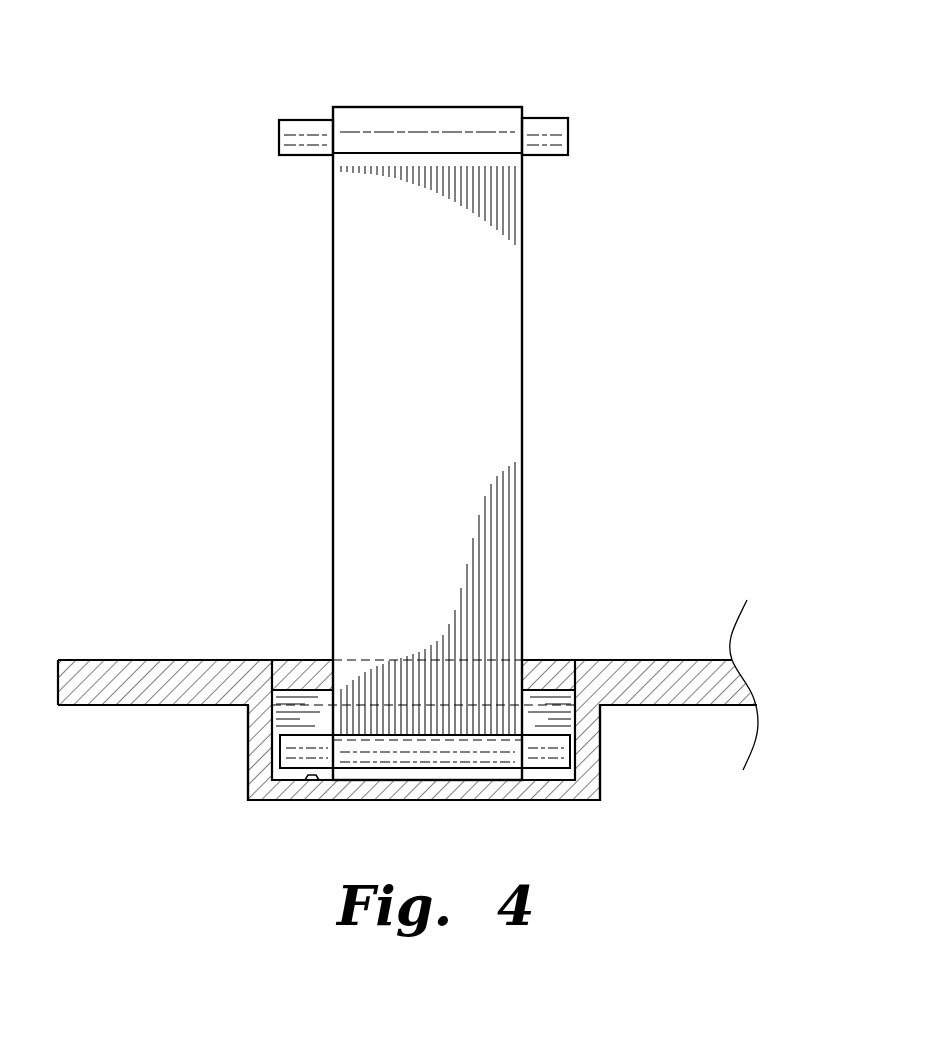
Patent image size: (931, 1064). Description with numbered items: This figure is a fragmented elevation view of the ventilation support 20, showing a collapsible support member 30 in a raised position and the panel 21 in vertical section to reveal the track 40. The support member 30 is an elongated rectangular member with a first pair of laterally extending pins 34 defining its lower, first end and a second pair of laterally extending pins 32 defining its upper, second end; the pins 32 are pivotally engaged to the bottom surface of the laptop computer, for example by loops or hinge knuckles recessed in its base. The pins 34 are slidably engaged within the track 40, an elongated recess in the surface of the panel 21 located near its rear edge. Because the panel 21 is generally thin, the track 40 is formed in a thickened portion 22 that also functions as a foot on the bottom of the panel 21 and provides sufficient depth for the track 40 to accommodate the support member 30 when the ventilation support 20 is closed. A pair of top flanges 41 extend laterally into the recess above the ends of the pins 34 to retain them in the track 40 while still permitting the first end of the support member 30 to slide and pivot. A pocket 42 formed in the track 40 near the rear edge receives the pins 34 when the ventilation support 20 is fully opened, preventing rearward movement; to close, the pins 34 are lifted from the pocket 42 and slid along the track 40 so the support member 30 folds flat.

The ventilation support 20 is at (186, 484).
The panel 21 is at (662, 657).
The thickened portion 22 is at (247, 758).
The collapsible support member 30 is at (523, 397).
The second pair of laterally extending pins 32 is at (280, 120).
The first pair of laterally extending pins 34 is at (545, 755).
The track 40 is at (567, 718).
The top flanges 41 is at (312, 657).
The pocket 42 is at (313, 777).